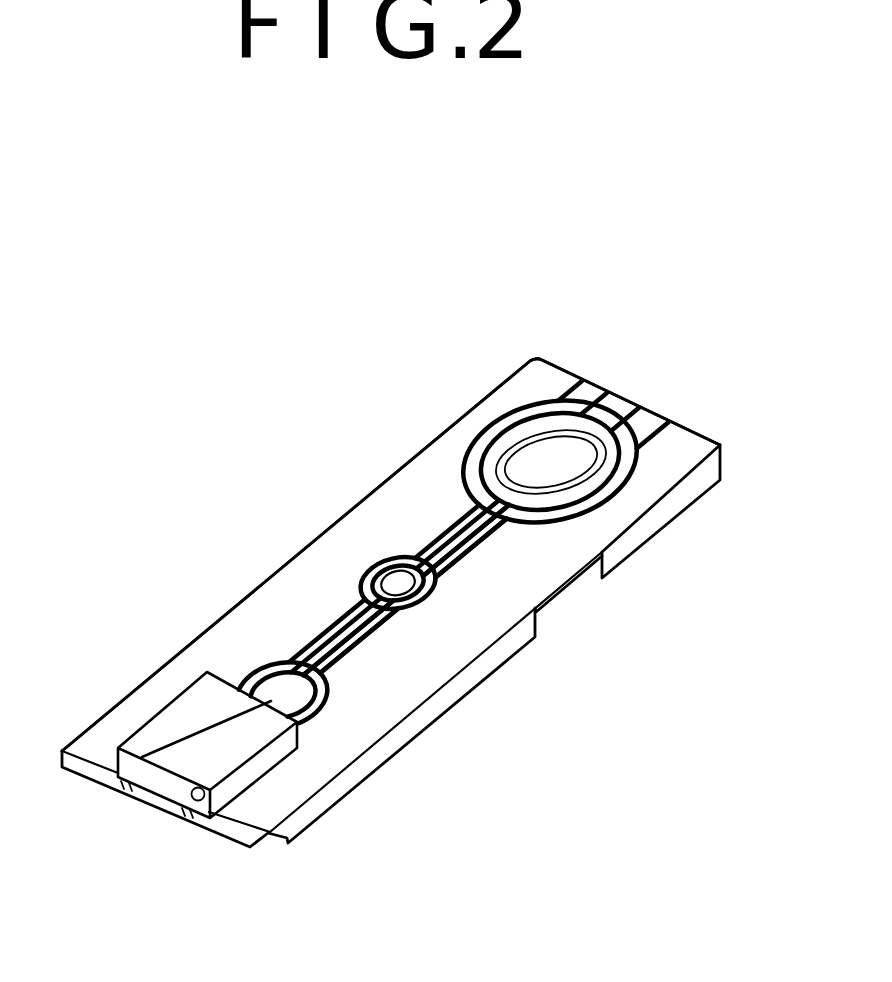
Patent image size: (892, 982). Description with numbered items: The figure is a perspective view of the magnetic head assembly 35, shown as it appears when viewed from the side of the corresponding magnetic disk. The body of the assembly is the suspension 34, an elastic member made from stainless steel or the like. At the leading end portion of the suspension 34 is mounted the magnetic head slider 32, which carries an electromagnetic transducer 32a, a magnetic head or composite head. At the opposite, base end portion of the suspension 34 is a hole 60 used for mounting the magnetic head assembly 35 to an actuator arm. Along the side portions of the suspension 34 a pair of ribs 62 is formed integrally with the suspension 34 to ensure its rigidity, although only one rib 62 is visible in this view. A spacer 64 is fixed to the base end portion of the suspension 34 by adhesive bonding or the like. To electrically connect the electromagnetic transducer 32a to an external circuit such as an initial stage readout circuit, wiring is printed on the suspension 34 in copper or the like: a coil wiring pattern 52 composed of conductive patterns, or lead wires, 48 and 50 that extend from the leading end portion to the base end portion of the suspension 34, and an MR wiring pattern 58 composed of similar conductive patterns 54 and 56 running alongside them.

The magnetic head slider 32 is at (117, 677).
The electromagnetic transducer 32a is at (190, 800).
The suspension 34 is at (370, 505).
The magnetic head assembly 35 is at (372, 407).
The conductive pattern 48 is at (372, 620).
The conductive pattern 50 is at (352, 648).
The coil wiring pattern 52 is at (568, 663).
The conductive pattern 54 is at (330, 641).
The conductive pattern 56 is at (303, 652).
The MR wiring pattern 58 is at (190, 497).
The hole 60 is at (535, 439).
The rib 62 is at (398, 747).
The spacer 64 is at (653, 530).